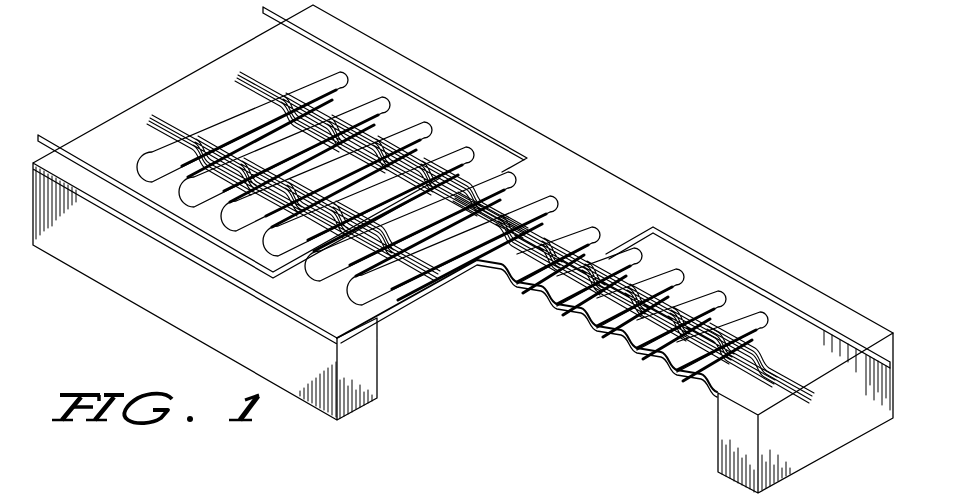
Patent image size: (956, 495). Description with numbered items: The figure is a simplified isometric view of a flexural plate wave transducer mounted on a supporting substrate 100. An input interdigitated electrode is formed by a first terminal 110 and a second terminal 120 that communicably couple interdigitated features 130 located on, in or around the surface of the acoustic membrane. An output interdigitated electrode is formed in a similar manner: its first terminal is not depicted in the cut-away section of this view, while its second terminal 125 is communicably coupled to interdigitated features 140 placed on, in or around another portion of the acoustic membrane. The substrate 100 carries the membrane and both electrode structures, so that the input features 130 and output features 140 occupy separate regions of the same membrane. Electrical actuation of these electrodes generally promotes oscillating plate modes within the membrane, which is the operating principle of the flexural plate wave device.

The supporting substrate 100 is at (200, 307).
The first terminal 110 is at (40, 134).
The second terminal 120 is at (263, 9).
The second terminal 125 is at (806, 322).
The interdigitated features 130 is at (307, 188).
The interdigitated features 140 is at (668, 410).